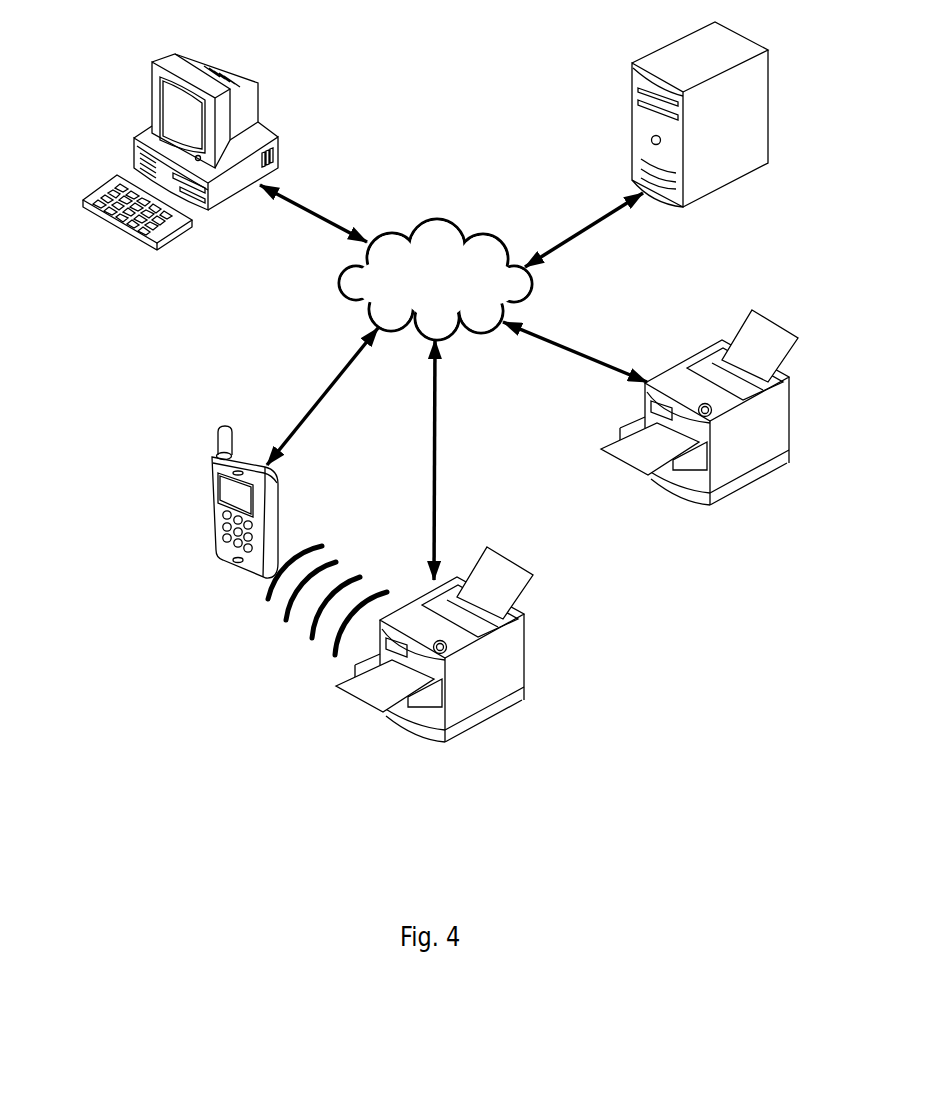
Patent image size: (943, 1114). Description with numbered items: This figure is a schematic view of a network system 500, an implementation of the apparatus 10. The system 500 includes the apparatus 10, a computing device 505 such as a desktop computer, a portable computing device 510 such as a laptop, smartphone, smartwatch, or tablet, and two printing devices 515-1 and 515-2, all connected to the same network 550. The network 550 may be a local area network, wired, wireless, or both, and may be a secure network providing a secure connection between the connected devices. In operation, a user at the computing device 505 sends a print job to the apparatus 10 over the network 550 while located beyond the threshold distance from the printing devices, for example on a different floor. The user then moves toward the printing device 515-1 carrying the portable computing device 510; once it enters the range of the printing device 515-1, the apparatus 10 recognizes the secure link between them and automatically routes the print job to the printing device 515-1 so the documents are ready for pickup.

The network system 500 is at (190, 668).
The computing device 505 is at (140, 130).
The apparatus 10 is at (632, 115).
The network 550 is at (435, 279).
The portable computing device 510 is at (208, 532).
The printing device 515-1 is at (525, 643).
The printing device 515-2 is at (750, 490).